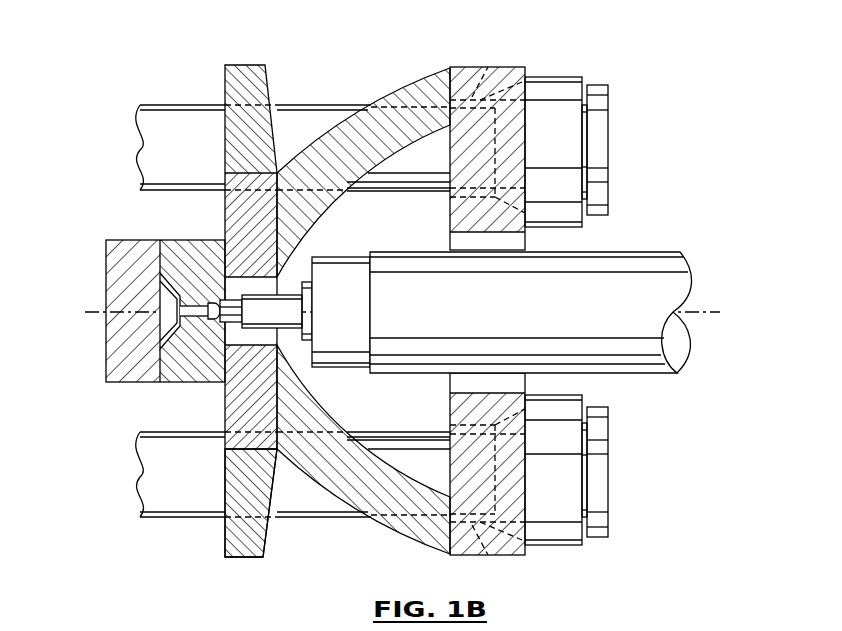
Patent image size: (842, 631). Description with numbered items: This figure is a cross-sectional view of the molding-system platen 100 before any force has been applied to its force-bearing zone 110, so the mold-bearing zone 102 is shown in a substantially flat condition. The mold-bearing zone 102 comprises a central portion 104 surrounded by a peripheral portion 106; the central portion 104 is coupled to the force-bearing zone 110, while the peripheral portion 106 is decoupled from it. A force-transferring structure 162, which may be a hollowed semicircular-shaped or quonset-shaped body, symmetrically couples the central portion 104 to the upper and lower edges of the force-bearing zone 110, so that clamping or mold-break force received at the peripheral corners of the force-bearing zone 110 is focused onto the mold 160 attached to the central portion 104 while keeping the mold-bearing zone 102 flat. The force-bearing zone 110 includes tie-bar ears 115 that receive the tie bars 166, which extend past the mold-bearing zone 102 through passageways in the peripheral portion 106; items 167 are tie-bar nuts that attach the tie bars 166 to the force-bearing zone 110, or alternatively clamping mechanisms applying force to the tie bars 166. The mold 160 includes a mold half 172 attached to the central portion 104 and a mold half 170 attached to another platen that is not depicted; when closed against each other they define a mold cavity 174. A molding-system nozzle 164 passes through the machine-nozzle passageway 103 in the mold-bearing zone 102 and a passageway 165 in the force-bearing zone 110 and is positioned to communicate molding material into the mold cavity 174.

The molding-system platen 100 is at (692, 100).
The mold-bearing zone 102 is at (222, 540).
The machine-nozzle passageway 103 is at (178, 328).
The central portion 104 is at (252, 406).
The peripheral portion 106 is at (237, 485).
The force-bearing zone 110 is at (505, 555).
The tie-bar ears 115 is at (488, 70).
The mold 160 is at (106, 347).
The force-transferring structure 162 is at (363, 138).
The molding-system nozzle 164 is at (670, 262).
The passageway 165 is at (513, 242).
The tie bars 166 is at (170, 125).
The tie-bar nuts 167 is at (558, 62).
The mold half 170 is at (132, 250).
The mold half 172 is at (180, 247).
The mold cavity 174 is at (185, 276).